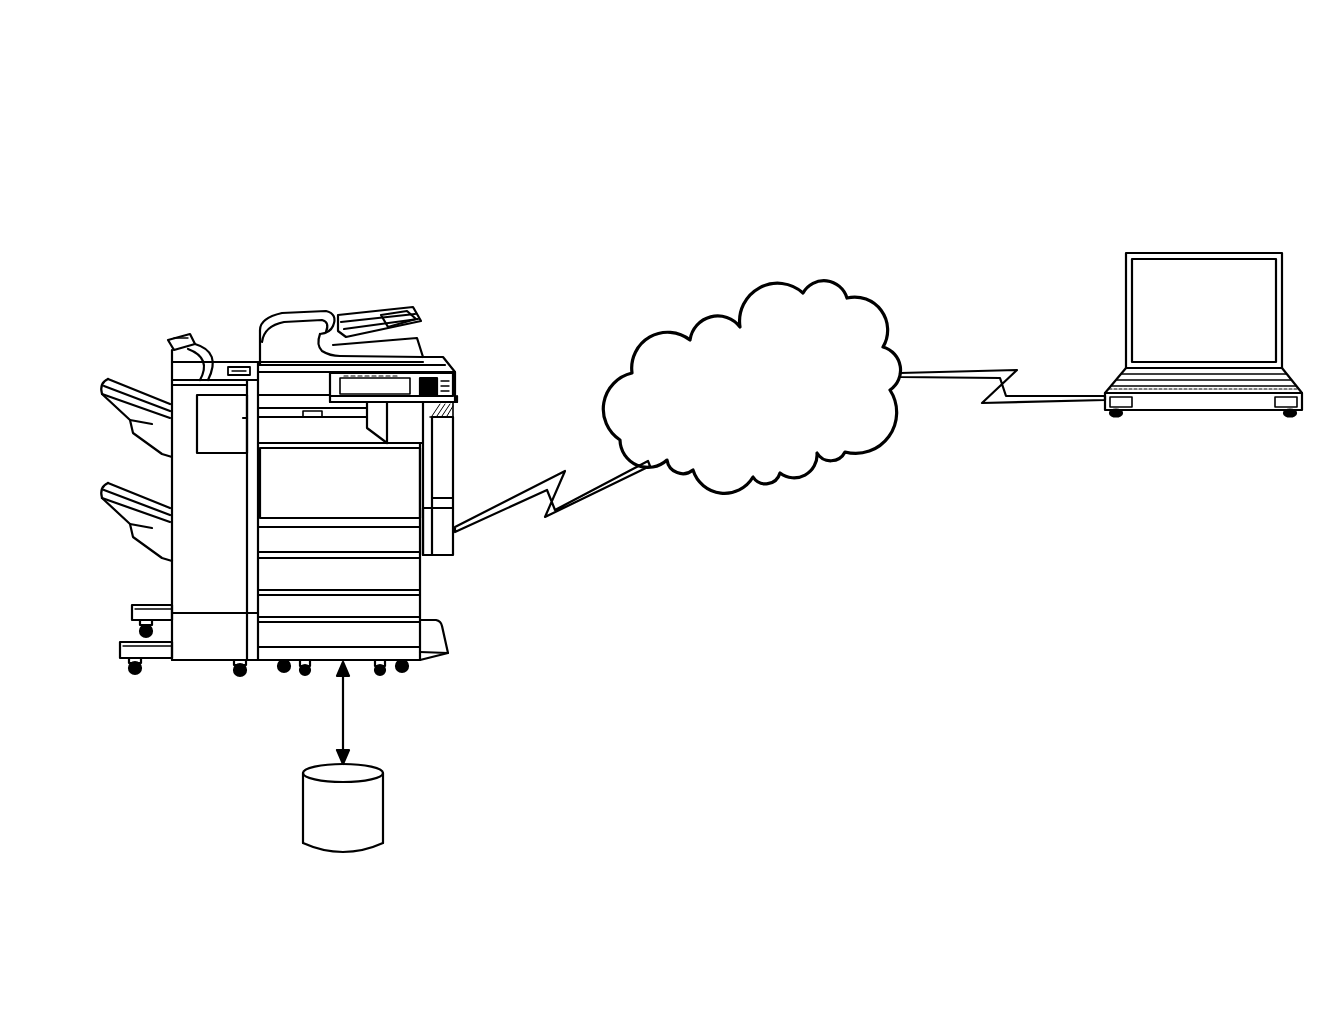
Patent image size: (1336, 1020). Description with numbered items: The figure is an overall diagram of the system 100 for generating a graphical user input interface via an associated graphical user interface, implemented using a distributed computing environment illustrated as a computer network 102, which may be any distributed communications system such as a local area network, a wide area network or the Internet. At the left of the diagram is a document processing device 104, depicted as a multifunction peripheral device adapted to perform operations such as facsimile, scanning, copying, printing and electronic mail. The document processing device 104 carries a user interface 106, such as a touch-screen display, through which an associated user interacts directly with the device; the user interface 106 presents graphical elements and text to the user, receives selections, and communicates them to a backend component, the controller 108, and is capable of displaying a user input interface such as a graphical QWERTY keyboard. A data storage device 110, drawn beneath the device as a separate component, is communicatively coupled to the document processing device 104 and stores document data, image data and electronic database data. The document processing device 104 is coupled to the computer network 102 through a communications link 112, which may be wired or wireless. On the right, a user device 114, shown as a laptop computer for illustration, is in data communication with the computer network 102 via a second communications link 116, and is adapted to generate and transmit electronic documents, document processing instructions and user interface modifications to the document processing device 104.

The system 100 is at (788, 88).
The computer network 102 is at (818, 281).
The document processing device 104 is at (310, 305).
The user interface 106 is at (455, 390).
The controller 108 is at (413, 486).
The data storage device 110 is at (366, 770).
The communications link 112 is at (558, 517).
The user device 114 is at (1128, 255).
The communications link 116 is at (1003, 365).